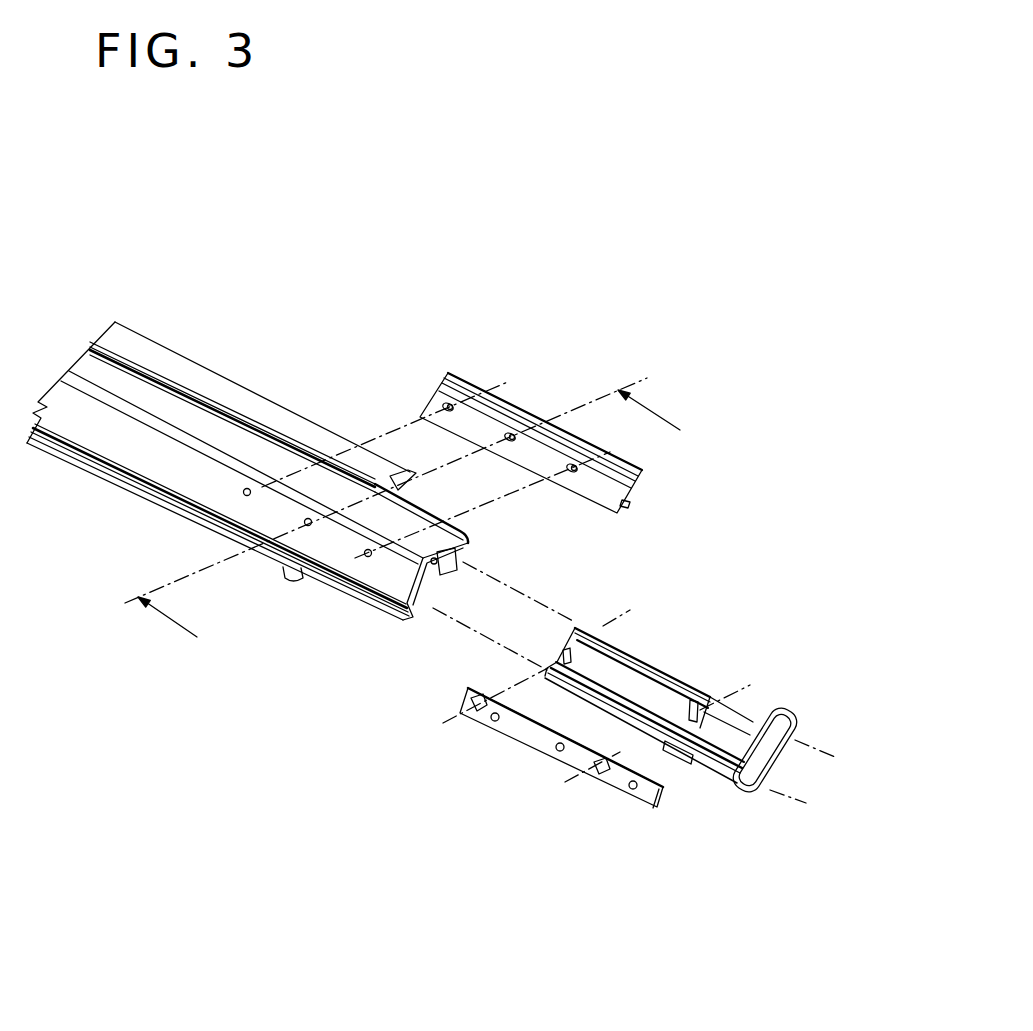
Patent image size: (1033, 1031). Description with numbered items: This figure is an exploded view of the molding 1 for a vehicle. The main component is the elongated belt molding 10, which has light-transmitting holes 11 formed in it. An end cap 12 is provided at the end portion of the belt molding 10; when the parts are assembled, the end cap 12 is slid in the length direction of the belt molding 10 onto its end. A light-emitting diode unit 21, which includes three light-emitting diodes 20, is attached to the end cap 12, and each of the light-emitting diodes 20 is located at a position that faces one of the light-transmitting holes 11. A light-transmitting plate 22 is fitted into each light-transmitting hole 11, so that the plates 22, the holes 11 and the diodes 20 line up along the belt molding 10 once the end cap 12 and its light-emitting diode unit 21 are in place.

The molding 1 is at (362, 363).
The belt molding 10 is at (137, 450).
The light-transmitting hole 11 is at (243, 495).
The end cap 12 is at (767, 755).
The light-emitting diode 20 is at (495, 721).
The light-emitting diode unit 21 is at (672, 808).
The light-transmitting plate 22 is at (485, 425).